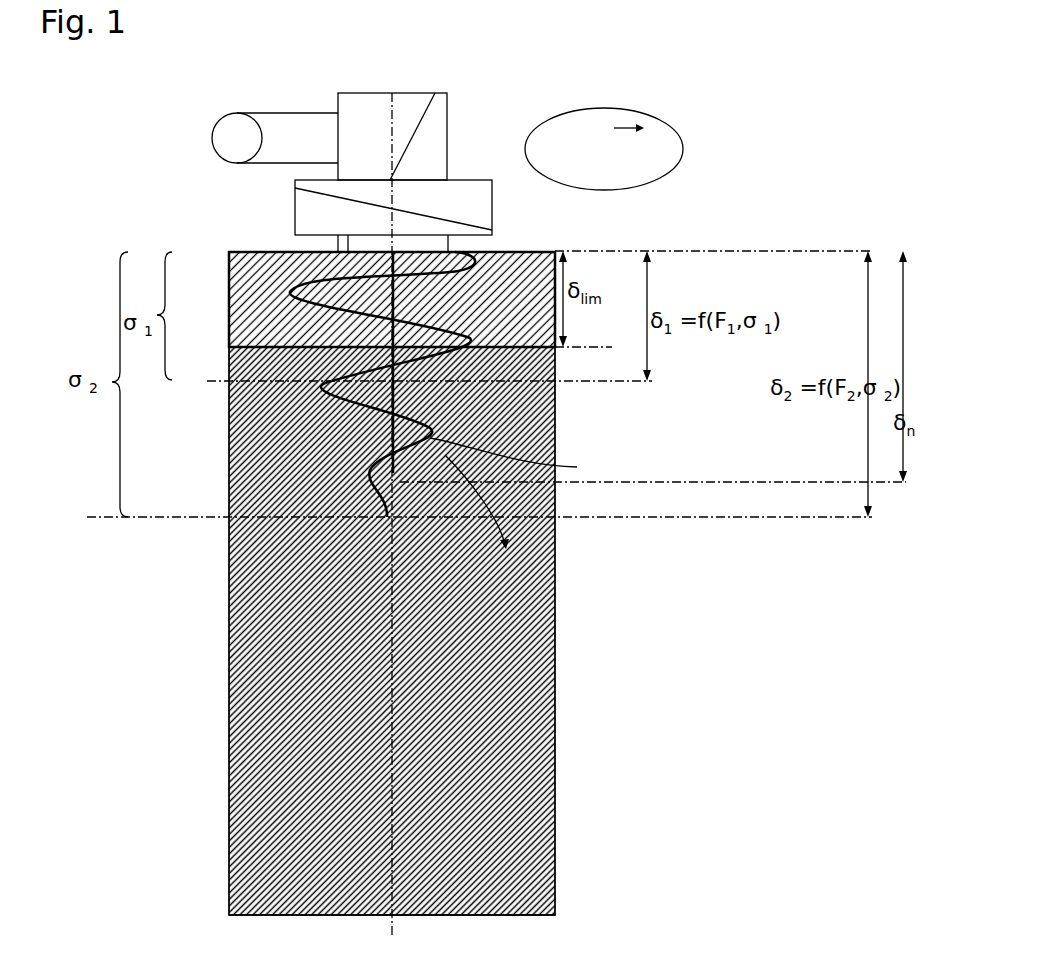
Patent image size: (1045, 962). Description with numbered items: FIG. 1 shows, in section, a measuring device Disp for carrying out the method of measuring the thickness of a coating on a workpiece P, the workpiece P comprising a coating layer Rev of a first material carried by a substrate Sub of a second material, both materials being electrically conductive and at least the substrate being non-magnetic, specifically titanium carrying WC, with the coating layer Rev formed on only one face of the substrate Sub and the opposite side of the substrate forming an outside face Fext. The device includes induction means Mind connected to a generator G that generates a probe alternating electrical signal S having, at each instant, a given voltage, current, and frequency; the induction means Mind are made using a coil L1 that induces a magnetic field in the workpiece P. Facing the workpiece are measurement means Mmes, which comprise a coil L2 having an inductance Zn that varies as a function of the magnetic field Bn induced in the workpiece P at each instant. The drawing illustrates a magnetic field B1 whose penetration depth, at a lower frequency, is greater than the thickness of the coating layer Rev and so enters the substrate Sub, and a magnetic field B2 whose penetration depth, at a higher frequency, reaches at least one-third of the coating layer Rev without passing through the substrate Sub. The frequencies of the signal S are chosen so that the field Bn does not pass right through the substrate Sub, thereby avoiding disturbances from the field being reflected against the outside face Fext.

The measuring device Disp is at (196, 130).
The generator G is at (275, 138).
The induction means Mind is at (392, 136).
The measurement means Mmes is at (393, 207).
The coil L1 is at (438, 107).
The coil L2 is at (470, 180).
The probe alternating electrical signal S is at (280, 99).
The inductance Zn is at (534, 161).
The coating layer Rev is at (272, 263).
The substrate Sub is at (250, 848).
The workpiece P is at (218, 254).
The magnetic field B1 is at (533, 252).
The magnetic field B2 is at (614, 453).
The magnetic field Bn is at (532, 569).
The outside face Fext is at (468, 915).